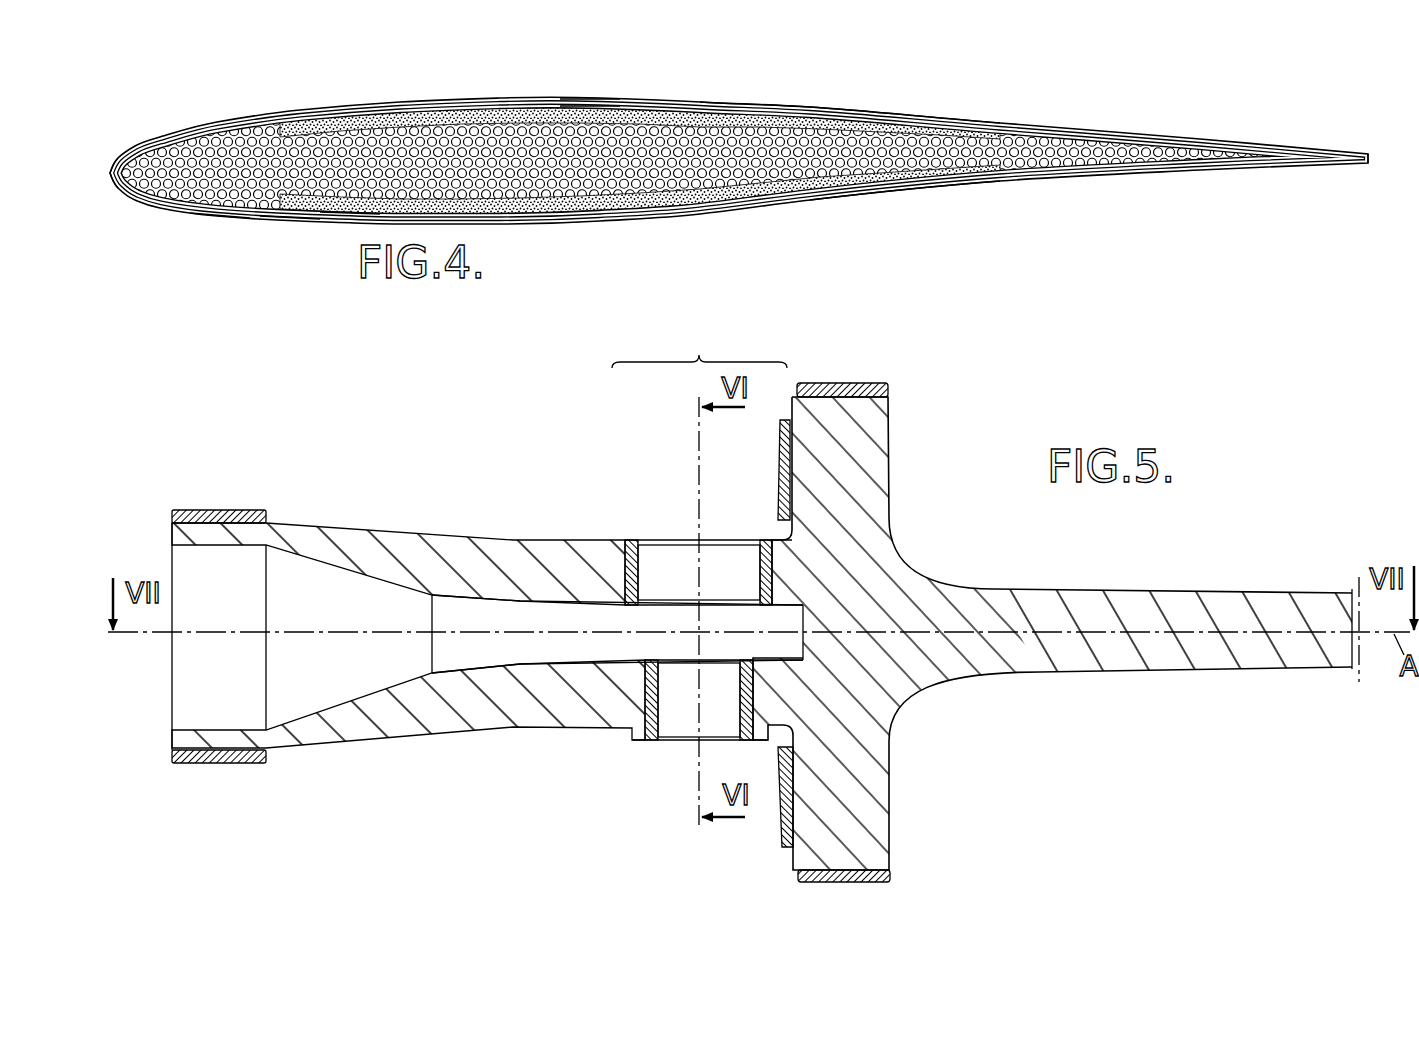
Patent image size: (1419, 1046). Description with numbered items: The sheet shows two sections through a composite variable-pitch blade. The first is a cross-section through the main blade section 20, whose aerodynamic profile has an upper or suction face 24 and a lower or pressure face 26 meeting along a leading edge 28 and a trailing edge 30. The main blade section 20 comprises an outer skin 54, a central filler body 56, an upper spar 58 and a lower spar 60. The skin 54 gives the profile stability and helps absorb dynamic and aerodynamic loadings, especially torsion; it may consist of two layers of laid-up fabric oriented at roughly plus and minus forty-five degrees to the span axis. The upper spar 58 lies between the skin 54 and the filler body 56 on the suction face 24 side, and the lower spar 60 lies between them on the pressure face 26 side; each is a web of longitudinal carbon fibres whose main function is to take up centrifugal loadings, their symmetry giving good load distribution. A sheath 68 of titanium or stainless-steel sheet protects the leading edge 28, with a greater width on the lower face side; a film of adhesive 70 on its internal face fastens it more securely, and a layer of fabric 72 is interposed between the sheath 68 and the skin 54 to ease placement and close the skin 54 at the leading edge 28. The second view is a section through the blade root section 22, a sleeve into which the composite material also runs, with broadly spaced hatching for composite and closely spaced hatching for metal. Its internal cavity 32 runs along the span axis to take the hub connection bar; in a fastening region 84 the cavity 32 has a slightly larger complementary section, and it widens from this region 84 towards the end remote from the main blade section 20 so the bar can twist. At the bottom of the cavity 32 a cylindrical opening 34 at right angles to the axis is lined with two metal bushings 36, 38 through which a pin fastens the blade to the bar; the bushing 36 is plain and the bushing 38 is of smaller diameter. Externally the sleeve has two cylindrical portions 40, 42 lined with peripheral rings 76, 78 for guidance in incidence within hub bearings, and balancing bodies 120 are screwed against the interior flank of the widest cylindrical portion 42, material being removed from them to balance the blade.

In FIG. 4, the main blade section 20 is at (1082, 124).
In FIG. 5, the main blade section 20 is at (1262, 646).
In FIG. 5, the blade root section 22 is at (512, 488).
In FIG. 4, the upper face 24 is at (810, 107).
In FIG. 5, the upper face 24 is at (1154, 589).
In FIG. 4, the lower face 26 is at (908, 193).
In FIG. 5, the lower face 26 is at (1114, 672).
In FIG. 4, the leading edge 28 is at (113, 170).
In FIG. 4, the trailing edge 30 is at (1370, 163).
In FIG. 5, the internal cavity 32 is at (540, 652).
In FIG. 5, the cylindrical opening 34 is at (743, 560).
In FIG. 5, the metal bushing 36 is at (633, 540).
In FIG. 5, the metal bushing 38 is at (645, 740).
In FIG. 5, the cylindrical portion 40 is at (210, 510).
In FIG. 5, the cylindrical portion 42 is at (845, 383).
In FIG. 4, the outer skin 54 is at (622, 108).
In FIG. 4, the central filler body 56 is at (1010, 170).
In FIG. 4, the upper spar 58 is at (323, 122).
In FIG. 4, the lower spar 60 is at (830, 187).
In FIG. 4, the sheath 68 is at (218, 218).
In FIG. 4, the film of adhesive 70 is at (285, 215).
In FIG. 4, the layer of fabric 72 is at (343, 212).
In FIG. 5, the ring 76 is at (217, 755).
In FIG. 5, the ring 78 is at (890, 880).
In FIG. 5, the fastening region 84 is at (699, 345).
In FIG. 5, the balancing body 120 is at (780, 452).